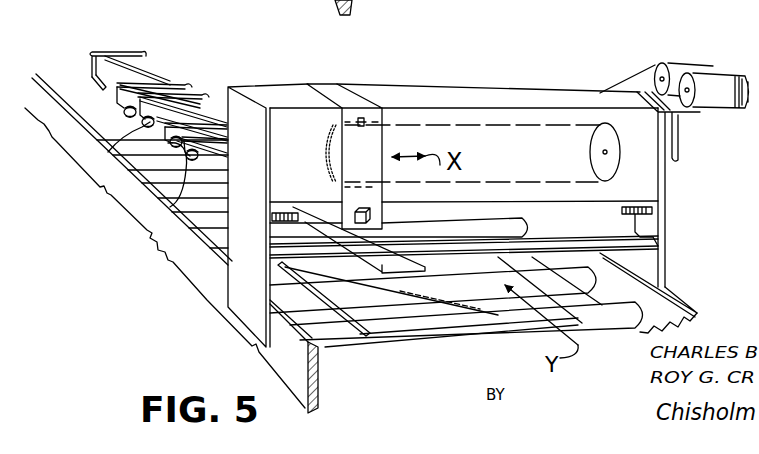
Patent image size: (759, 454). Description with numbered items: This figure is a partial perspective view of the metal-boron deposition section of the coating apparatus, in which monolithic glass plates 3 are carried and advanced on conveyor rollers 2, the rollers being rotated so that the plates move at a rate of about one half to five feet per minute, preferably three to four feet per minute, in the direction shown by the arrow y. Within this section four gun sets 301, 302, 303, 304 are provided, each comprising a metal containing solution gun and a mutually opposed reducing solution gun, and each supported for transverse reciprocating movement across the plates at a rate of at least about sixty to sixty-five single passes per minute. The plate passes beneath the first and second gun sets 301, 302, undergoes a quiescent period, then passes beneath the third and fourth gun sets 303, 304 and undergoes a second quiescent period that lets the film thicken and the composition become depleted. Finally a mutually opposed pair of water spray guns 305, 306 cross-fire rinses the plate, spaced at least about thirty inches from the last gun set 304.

The rollers 2 is at (331, 344).
The monolithic glass plates 3 is at (379, 328).
The gun set 301 is at (171, 260).
The gun set 302 is at (120, 148).
The gun set 303 is at (172, 208).
The gun set 304 is at (125, 114).
The water spray gun 305 is at (88, 72).
The water spray gun 306 is at (140, 55).